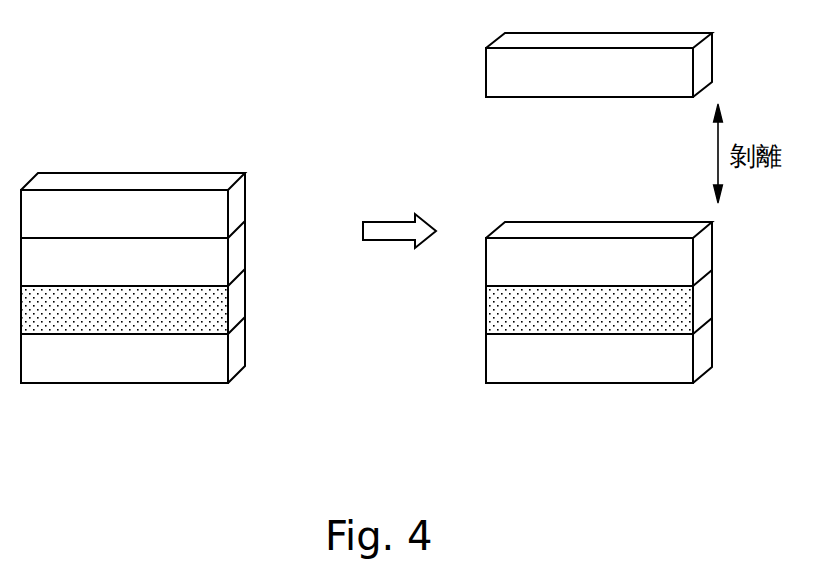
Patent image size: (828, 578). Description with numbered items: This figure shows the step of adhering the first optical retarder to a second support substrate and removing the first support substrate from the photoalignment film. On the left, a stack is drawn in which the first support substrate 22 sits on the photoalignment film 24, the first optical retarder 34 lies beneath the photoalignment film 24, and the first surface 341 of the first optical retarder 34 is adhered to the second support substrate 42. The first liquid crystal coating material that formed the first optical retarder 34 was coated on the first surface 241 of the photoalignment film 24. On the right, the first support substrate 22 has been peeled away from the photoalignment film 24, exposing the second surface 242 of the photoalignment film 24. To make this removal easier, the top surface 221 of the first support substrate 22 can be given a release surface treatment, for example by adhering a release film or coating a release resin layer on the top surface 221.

The first support substrate 22 is at (245, 197).
The top surface of the first support substrate 221 is at (545, 97).
The photoalignment film 24 is at (245, 248).
The first surface of the photoalignment film 241 is at (548, 286).
The second surface of the photoalignment film 242 is at (590, 238).
The first optical retarder 34 is at (245, 296).
The first surface of the first optical retarder 341 is at (138, 334).
The second support substrate 42 is at (245, 345).